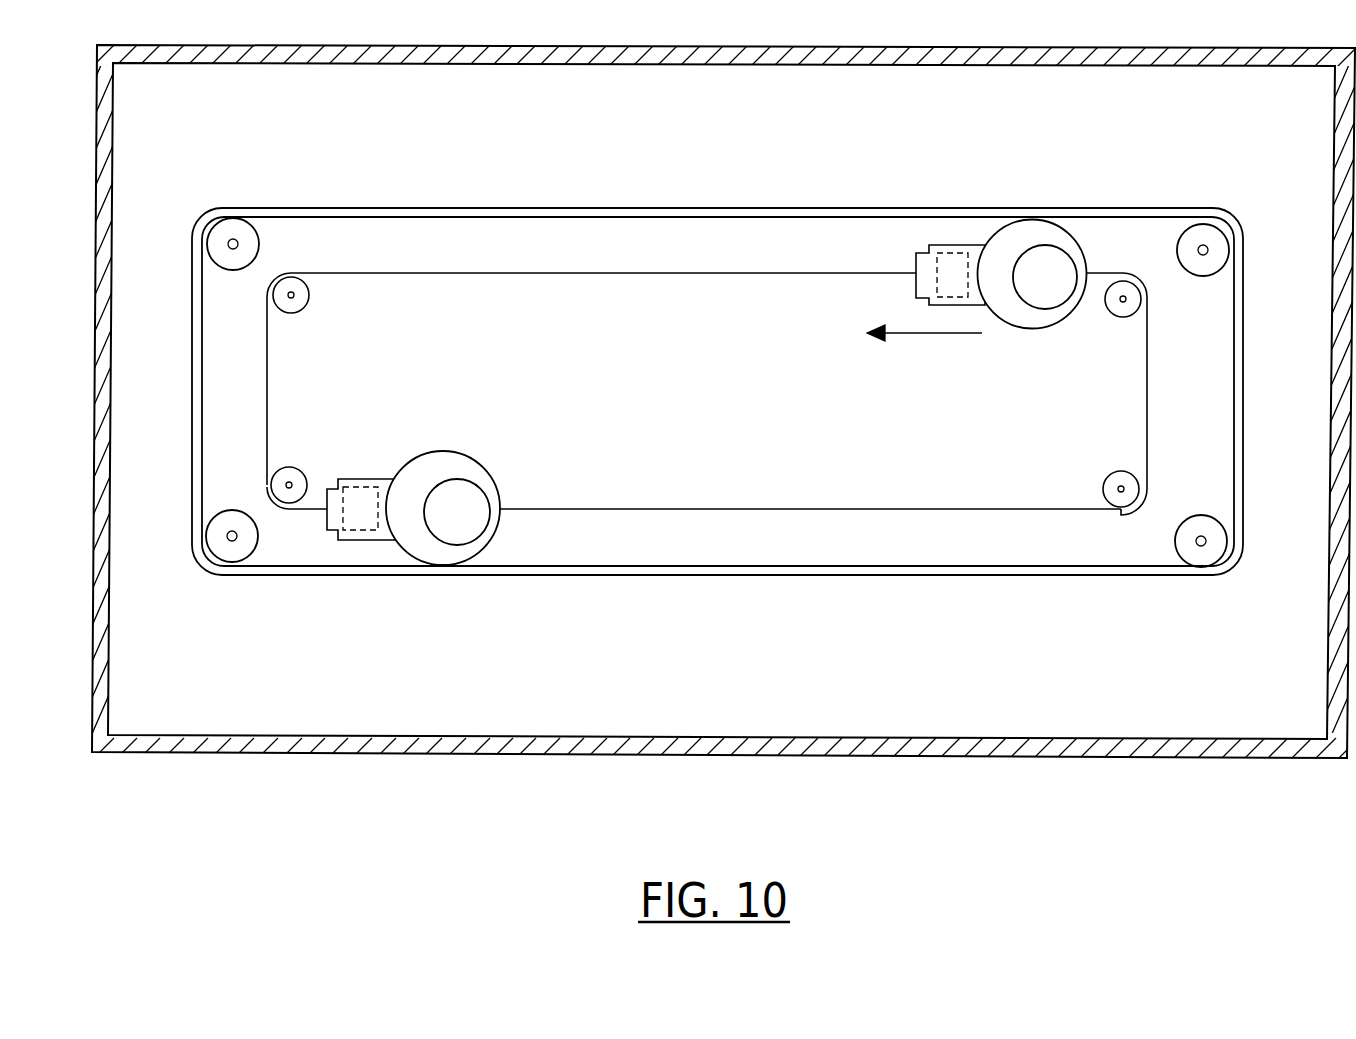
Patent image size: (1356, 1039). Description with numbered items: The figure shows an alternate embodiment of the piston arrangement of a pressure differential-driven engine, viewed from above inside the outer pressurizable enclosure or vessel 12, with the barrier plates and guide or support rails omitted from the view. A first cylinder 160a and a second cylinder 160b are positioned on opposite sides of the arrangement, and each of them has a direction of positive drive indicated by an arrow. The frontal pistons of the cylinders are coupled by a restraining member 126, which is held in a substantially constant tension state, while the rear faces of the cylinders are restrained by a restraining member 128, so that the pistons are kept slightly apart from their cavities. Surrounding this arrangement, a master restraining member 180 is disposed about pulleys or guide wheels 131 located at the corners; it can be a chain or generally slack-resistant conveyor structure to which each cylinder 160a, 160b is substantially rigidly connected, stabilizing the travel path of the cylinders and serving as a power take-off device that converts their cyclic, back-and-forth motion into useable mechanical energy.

The pressurizable enclosure or vessel 12 is at (238, 752).
The master restraining member 180 is at (771, 208).
The pulleys or guide wheels 131 is at (256, 240).
The restraining member 126 is at (603, 273).
The restraining member 128 is at (1146, 386).
The first cylinder 160a is at (1017, 330).
The second cylinder 160b is at (460, 453).